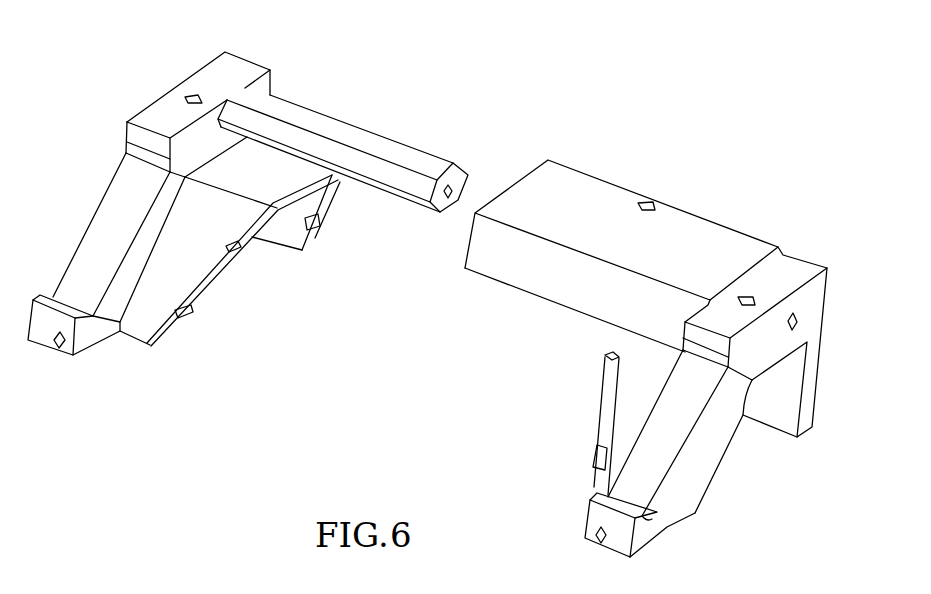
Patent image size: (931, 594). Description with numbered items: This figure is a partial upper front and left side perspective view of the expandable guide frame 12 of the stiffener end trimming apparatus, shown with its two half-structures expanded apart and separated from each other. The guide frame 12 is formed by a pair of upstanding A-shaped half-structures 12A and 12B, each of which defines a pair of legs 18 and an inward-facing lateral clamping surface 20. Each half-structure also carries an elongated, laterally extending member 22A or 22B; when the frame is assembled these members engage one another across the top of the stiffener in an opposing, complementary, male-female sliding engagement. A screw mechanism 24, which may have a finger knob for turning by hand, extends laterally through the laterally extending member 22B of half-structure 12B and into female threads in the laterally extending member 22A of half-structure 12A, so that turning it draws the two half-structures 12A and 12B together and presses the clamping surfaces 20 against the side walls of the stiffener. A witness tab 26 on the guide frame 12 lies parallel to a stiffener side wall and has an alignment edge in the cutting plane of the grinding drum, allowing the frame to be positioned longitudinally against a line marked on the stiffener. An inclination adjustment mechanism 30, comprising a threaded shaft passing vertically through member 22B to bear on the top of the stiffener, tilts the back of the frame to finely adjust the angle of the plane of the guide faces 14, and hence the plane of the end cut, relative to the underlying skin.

The guide frame 12 is at (662, 93).
The A-shaped half-structure 12A is at (120, 81).
The A-shaped half-structure 12B is at (792, 213).
The guide faces 14 is at (110, 208).
The legs 18 is at (96, 332).
The inward-facing lateral clamping surfaces 20 is at (313, 233).
The laterally extending member 22A is at (275, 105).
The laterally extending member 22B is at (557, 187).
The screw mechanism 24 is at (800, 325).
The witness tab 26 is at (603, 370).
The inclination adjustment mechanism 30 is at (655, 200).